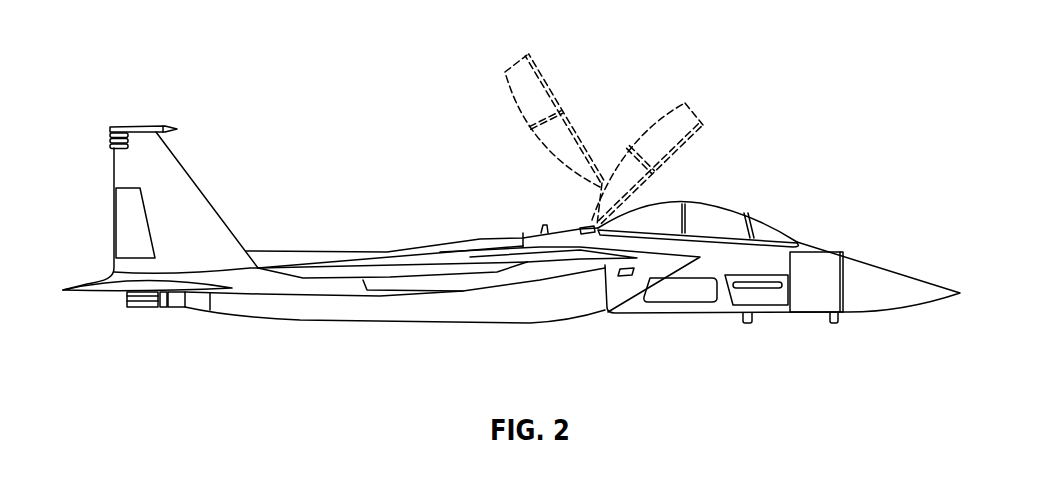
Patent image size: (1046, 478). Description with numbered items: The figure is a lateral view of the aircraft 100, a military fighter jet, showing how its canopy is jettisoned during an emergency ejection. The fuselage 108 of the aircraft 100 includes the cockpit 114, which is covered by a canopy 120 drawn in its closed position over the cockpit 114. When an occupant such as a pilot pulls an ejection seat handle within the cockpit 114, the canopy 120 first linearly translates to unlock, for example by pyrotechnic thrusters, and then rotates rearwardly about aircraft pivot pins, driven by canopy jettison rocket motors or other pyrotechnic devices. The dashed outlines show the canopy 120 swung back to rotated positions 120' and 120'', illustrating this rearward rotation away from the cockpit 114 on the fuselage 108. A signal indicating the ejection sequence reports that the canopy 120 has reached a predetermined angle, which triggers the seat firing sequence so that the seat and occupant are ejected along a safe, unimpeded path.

The aircraft 100 is at (117, 93).
The fuselage 108 is at (577, 227).
The cockpit 114 is at (742, 208).
The canopy 120 is at (698, 191).
The canopy position 120' is at (647, 140).
The canopy position 120'' is at (528, 123).